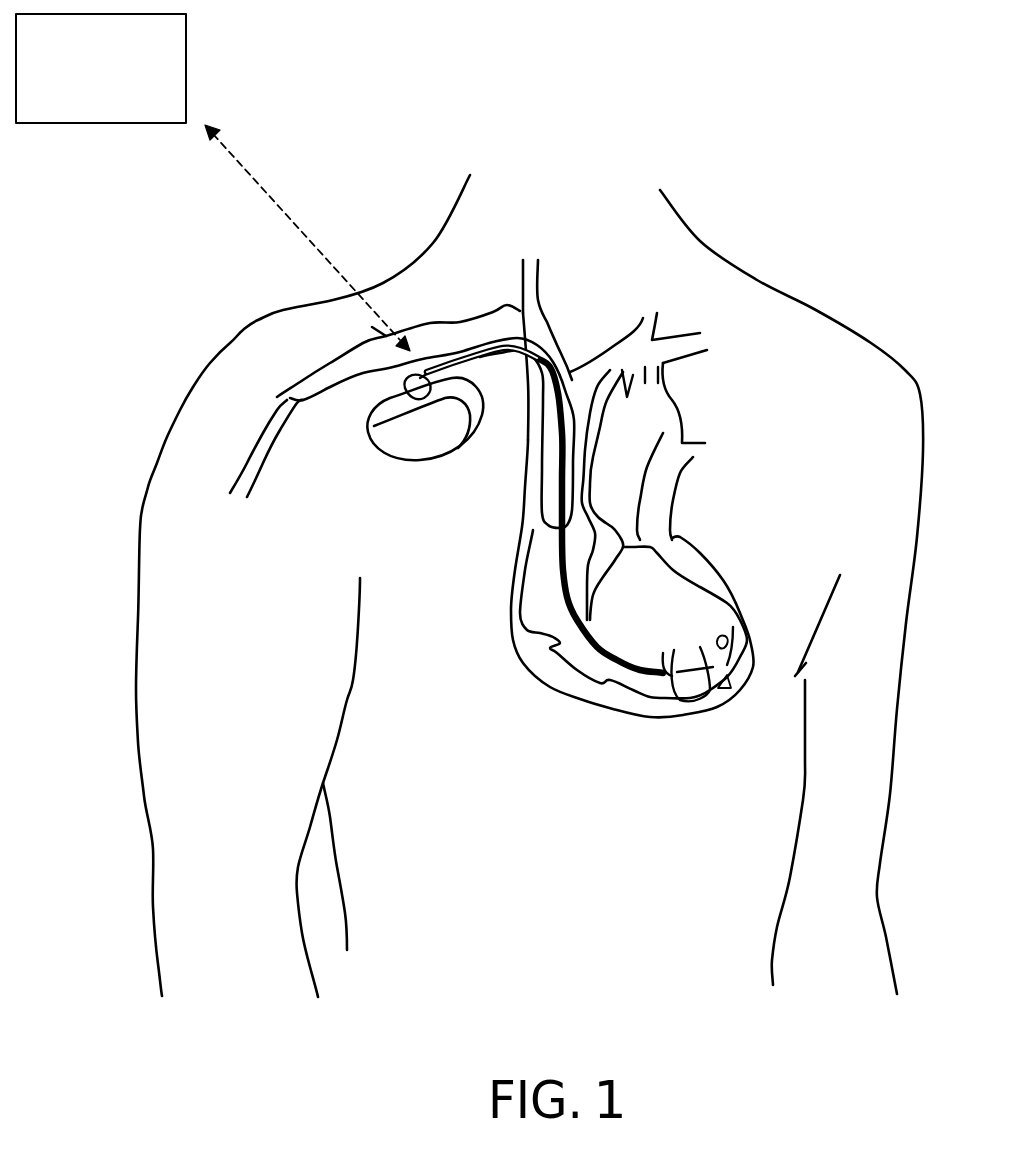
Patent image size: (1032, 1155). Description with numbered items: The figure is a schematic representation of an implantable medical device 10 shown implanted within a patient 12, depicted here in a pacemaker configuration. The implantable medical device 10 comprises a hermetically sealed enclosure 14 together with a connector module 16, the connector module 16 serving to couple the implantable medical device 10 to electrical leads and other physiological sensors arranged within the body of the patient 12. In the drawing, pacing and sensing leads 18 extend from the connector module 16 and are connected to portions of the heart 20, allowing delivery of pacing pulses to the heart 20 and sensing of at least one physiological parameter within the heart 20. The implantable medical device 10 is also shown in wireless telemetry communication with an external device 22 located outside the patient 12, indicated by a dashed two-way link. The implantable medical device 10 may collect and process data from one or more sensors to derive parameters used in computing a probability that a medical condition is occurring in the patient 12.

The implantable medical device 10 is at (397, 473).
The patient 12 is at (768, 262).
The hermetically sealed enclosure 14 is at (440, 428).
The connector module 16 is at (392, 398).
The pacing and sensing leads 18 is at (541, 472).
The heart 20 is at (627, 718).
The external device 22 is at (89, 107).